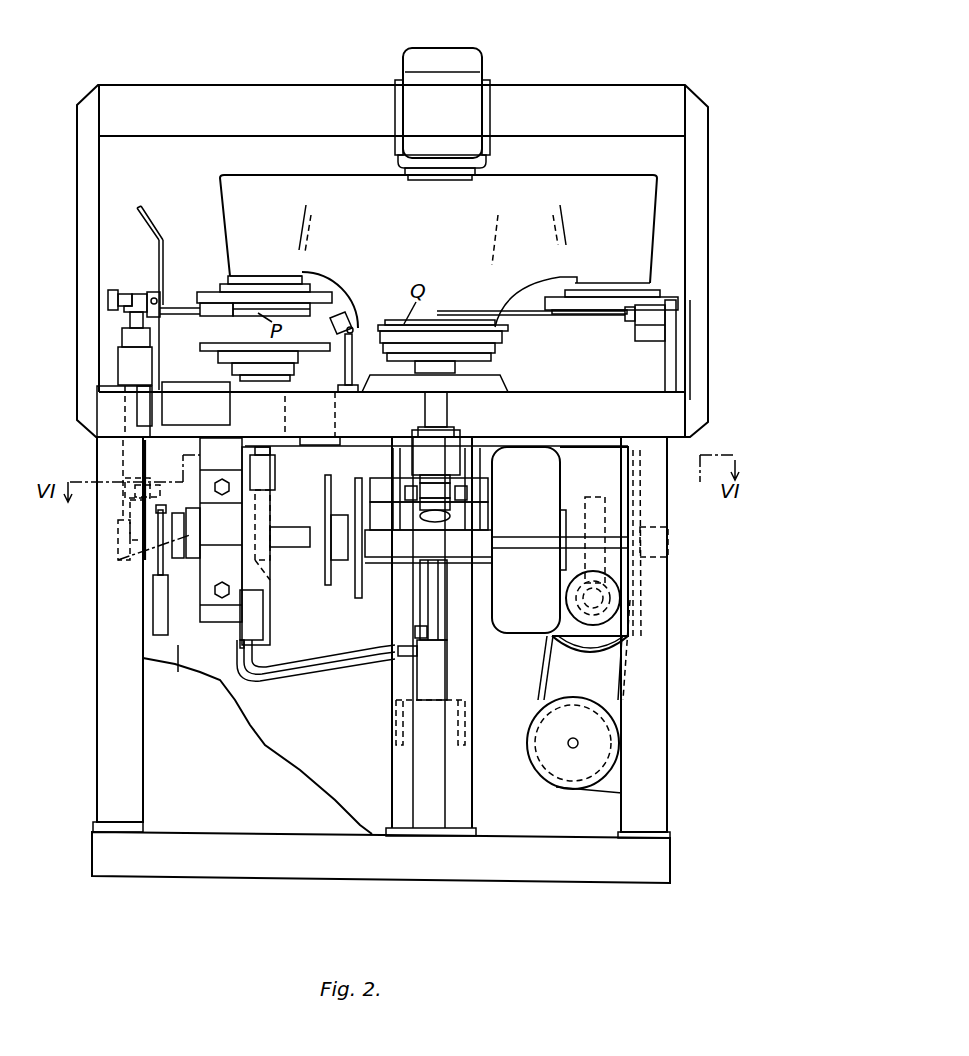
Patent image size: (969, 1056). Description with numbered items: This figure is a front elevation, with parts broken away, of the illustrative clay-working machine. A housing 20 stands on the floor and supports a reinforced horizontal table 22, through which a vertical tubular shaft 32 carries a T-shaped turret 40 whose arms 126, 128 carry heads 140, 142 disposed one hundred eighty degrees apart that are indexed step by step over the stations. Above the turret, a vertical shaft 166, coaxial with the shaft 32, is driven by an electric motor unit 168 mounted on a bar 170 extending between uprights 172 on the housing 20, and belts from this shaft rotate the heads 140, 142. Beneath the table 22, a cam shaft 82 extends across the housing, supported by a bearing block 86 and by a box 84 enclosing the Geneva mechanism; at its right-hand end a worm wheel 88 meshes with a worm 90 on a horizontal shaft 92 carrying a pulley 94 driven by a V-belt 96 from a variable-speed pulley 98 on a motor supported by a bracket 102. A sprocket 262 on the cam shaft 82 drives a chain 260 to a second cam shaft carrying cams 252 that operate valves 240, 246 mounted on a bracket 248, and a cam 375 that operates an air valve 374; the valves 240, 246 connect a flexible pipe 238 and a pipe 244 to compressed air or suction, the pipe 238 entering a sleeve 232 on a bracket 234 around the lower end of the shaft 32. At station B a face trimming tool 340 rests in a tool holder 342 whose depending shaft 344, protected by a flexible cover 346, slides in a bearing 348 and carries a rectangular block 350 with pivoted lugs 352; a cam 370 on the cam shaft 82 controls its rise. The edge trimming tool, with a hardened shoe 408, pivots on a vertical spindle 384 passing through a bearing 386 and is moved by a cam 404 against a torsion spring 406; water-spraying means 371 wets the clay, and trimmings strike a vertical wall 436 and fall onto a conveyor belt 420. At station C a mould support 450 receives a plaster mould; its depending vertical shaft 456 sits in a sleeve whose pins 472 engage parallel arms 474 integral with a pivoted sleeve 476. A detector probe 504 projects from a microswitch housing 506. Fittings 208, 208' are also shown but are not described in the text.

The electric motor unit 168 is at (458, 90).
The vertical shaft 166 is at (438, 180).
The bar 170 is at (585, 108).
The uprights 172 is at (80, 234).
The turret 40 is at (296, 168).
The arm 126 is at (278, 233).
The arm 128 is at (633, 235).
The head 140 is at (215, 291).
The head 142 is at (660, 296).
The hardened shoe 408 is at (232, 314).
The vertical wall 436 is at (157, 251).
The vertical spindle 384 is at (140, 329).
The bearing 386 is at (125, 394).
The face trimming tool 340 is at (312, 343).
The tool holder 342 is at (300, 358).
The flexible cover 346 is at (248, 380).
The conveyor belt 420 is at (212, 418).
The water-spraying means 371 is at (354, 318).
The mould support 450 is at (505, 352).
The depending vertical shaft 456 is at (447, 408).
The detector probe 504 is at (545, 316).
The microswitch housing 506 is at (646, 328).
The table 22 is at (582, 430).
The depending shaft 344 is at (311, 418).
The bearing 348 is at (330, 437).
The sleeve 476 is at (460, 462).
The pins 472 is at (468, 494).
The parallel arms 474 is at (455, 508).
The housing 20 is at (97, 702).
The bearing block 86 is at (232, 560).
The cam shaft 82 is at (275, 548).
The rectangular lugs 352 is at (276, 468).
The rectangular block 350 is at (268, 488).
The cam 370 is at (268, 516).
The cams 252 is at (272, 585).
The sprocket 262 is at (186, 548).
The cam 375 is at (160, 563).
The air valve 374 is at (160, 606).
The cam 404 is at (120, 545).
The torsion spring 406 is at (150, 482).
The chain 260 is at (165, 478).
The valve 246 is at (262, 632).
The pipe 244 is at (298, 668).
The flexible pipe 238 is at (346, 682).
The fitting 208 is at (389, 633).
The fitting 208' is at (464, 645).
The shaft 32 is at (447, 583).
The sleeve 232 is at (440, 674).
The bracket 234 is at (466, 718).
The bracket 248 is at (204, 674).
The valve 240 is at (250, 642).
The worm wheel 88 is at (560, 540).
The box 84 is at (634, 480).
The worm 90 is at (600, 598).
The horizontal shaft 92 is at (612, 612).
The pulley 94 is at (616, 582).
The V-belt 96 is at (620, 692).
The variable-speed pulley 98 is at (618, 746).
The bracket 102 is at (602, 790).